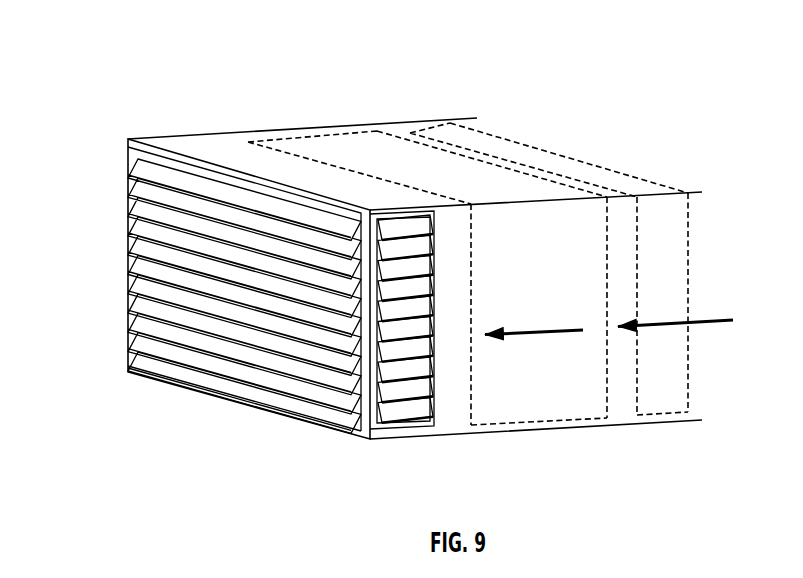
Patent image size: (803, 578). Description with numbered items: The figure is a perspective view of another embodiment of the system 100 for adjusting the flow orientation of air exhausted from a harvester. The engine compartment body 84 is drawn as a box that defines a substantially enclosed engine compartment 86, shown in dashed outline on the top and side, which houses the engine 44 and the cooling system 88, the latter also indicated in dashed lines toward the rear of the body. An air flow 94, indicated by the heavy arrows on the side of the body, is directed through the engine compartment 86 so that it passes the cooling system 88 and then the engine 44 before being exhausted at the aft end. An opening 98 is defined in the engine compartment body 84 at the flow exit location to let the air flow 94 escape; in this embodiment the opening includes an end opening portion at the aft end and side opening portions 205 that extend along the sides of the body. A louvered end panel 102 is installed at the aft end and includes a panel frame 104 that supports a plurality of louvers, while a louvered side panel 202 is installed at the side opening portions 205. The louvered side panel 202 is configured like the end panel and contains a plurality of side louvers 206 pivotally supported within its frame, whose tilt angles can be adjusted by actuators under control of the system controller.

The system 100 is at (92, 108).
The engine compartment body 84 is at (240, 149).
The engine compartment 86 is at (435, 138).
The cooling system 88 is at (670, 253).
The side louvers 206 is at (418, 268).
The louvered side panel 202 is at (438, 299).
The air flow 94 is at (536, 328).
The louvered end panel 102 is at (125, 298).
The opening 98 is at (265, 405).
The panel frame 104 is at (358, 436).
The side opening portions 205 is at (423, 430).
The engine 44 is at (557, 397).